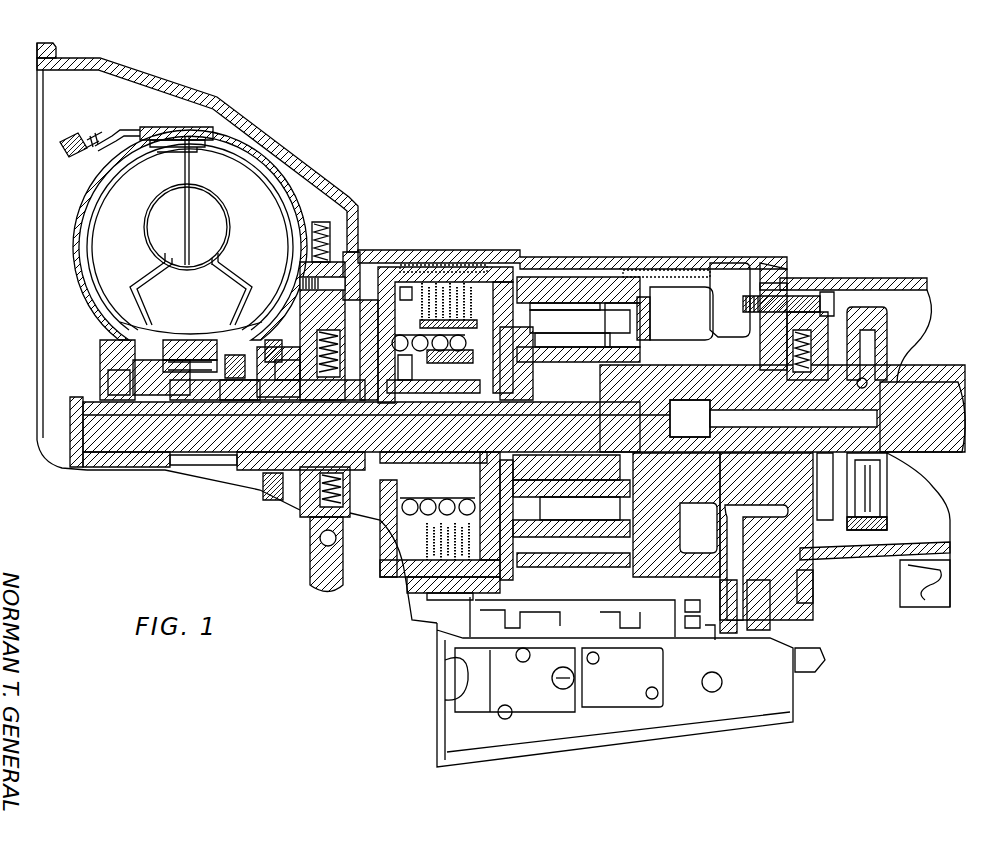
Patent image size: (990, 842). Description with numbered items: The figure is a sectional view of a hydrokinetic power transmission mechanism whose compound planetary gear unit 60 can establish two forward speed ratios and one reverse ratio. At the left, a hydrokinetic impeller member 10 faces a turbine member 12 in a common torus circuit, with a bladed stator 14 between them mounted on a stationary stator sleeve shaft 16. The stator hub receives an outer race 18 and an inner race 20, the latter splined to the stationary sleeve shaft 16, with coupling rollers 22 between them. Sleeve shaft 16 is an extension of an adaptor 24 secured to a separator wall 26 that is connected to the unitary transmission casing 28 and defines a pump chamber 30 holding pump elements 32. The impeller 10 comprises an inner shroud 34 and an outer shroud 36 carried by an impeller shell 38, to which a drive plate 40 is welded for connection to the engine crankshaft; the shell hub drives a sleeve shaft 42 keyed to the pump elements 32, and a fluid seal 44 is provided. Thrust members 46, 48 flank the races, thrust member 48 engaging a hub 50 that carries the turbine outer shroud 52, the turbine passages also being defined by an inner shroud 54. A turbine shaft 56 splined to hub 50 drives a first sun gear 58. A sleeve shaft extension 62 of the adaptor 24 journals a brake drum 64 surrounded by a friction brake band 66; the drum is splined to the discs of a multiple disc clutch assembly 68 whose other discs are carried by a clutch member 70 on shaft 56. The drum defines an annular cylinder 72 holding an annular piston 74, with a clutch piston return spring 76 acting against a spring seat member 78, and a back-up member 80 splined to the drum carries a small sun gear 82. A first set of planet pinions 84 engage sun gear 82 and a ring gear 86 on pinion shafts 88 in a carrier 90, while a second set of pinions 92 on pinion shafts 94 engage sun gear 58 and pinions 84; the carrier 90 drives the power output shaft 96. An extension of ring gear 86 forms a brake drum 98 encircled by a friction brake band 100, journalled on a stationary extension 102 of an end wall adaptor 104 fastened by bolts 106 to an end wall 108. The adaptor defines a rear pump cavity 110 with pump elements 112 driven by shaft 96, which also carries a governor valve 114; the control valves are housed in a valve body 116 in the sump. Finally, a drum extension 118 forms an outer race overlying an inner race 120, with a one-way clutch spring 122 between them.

The hydrokinetic impeller member 10 is at (244, 190).
The turbine member 12 is at (130, 219).
The bladed stator 14 is at (203, 296).
The stationary stator sleeve shaft 16 is at (244, 396).
The outer race 18 is at (218, 338).
The inner race 20 is at (188, 396).
The coupling rollers 22 is at (180, 350).
The adaptor 24 is at (372, 380).
The separator wall 26 is at (372, 250).
The transmission casing 28 is at (300, 140).
The pump chamber 30 is at (320, 388).
The pump elements 32 is at (345, 385).
The inner shroud 34 is at (227, 213).
The outer shroud 36 is at (211, 138).
The impeller shell 38 is at (182, 128).
The drive plate 40 is at (72, 162).
The sleeve shaft 42 is at (285, 388).
The fluid seal 44 is at (275, 352).
The thrust member 46 is at (238, 356).
The thrust member 48 is at (150, 392).
The hub 50 is at (128, 392).
The outer shroud 52 is at (118, 160).
The inner shroud 54 is at (180, 212).
The turbine shaft 56 is at (493, 437).
The first sun gear 58 is at (622, 355).
The compound planetary gear unit 60 is at (616, 262).
The sleeve shaft extension 62 is at (440, 394).
The brake drum 64 is at (428, 268).
The friction brake band 66 is at (450, 283).
The multiple disc clutch assembly 68 is at (470, 322).
The clutch member 70 is at (506, 462).
The annular cylinder 72 is at (402, 295).
The annular piston 74 is at (405, 382).
The clutch piston return spring 76 is at (458, 352).
The spring seat member 78 is at (460, 495).
The fluid pressure force back-up member 80 is at (520, 262).
The sun gear 82 is at (552, 457).
The first set of planet pinions 84 is at (563, 330).
The ring gear 86 is at (560, 330).
The pinion shafts 88 is at (588, 331).
The planetary gear carrier 90 is at (655, 300).
The second set of pinions 92 is at (605, 515).
The pinion shafts 94 is at (568, 512).
The power output shaft 96 is at (928, 400).
The brake drum 98 is at (706, 556).
The friction brake band 100 is at (650, 268).
The stationary extension 102 is at (690, 418).
The end wall adaptor 104 is at (780, 286).
The bolts 106 is at (822, 297).
The end wall 108 is at (752, 292).
The rear pump cavity 110 is at (795, 512).
The pump elements 112 is at (812, 370).
The governor valve 114 is at (888, 505).
The valve body 116 is at (632, 682).
The extension 118 is at (388, 275).
The inner race 120 is at (345, 282).
The one-way clutch spring 122 is at (280, 352).